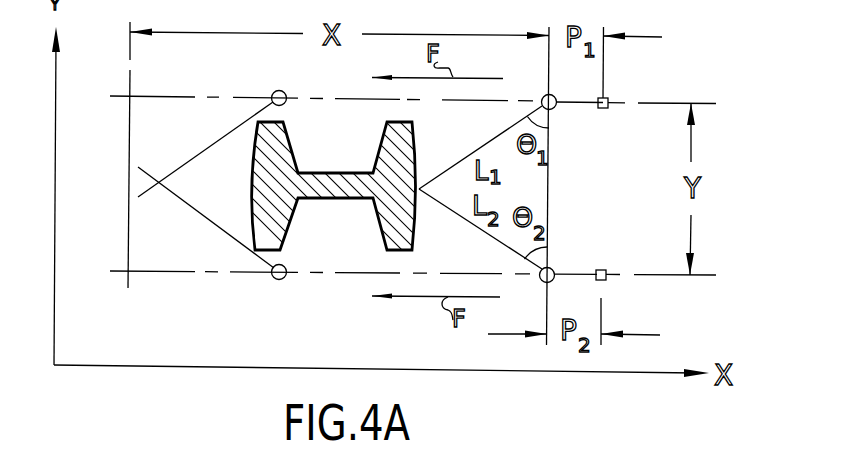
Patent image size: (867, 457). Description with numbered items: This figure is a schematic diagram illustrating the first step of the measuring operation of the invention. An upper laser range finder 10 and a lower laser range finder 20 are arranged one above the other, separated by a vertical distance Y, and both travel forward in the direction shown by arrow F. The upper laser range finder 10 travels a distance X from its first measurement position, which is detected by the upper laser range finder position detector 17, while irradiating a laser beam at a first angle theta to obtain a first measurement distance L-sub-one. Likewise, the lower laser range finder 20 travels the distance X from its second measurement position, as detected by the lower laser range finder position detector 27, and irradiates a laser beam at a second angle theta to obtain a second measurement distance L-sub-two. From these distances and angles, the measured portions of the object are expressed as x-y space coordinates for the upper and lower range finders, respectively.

The upper laser range finder 10 is at (556, 105).
The lower laser range finder 20 is at (554, 271).
The upper laser range finder position detector 17 is at (604, 97).
The lower laser range finder position detector 27 is at (603, 281).